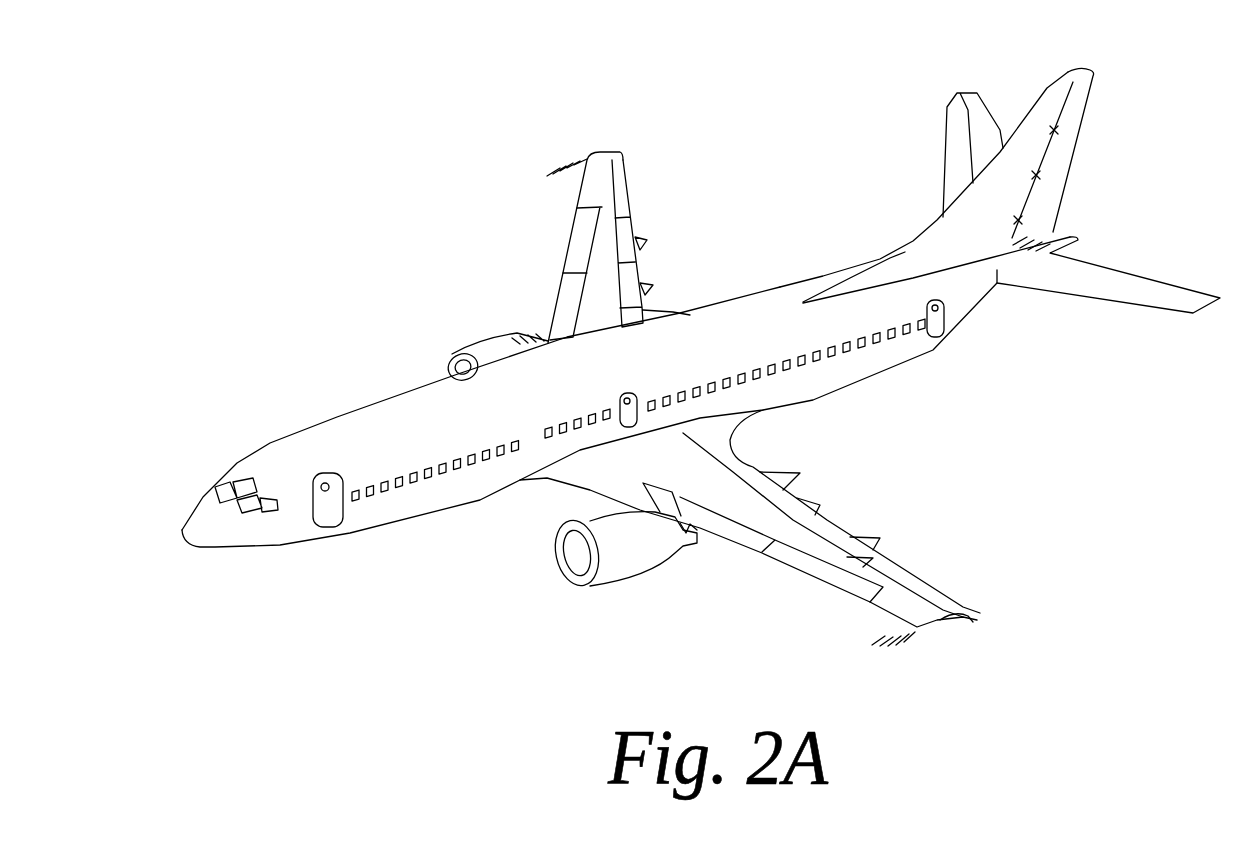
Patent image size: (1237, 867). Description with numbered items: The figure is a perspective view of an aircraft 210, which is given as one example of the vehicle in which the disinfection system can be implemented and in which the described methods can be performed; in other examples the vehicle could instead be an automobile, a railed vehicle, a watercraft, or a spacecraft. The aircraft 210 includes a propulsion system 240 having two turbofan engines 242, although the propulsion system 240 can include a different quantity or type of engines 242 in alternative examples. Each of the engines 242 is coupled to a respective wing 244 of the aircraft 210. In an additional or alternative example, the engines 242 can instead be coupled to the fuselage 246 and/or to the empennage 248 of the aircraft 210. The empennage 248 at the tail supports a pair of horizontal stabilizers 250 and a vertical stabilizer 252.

The aircraft 210 is at (423, 127).
The propulsion system 240 is at (533, 630).
The turbofan engine 242 is at (493, 337).
The wing 244 is at (603, 153).
The fuselage 246 is at (397, 507).
The empennage 248 is at (841, 245).
The horizontal stabilizer 250 is at (973, 100).
The vertical stabilizer 252 is at (1057, 73).